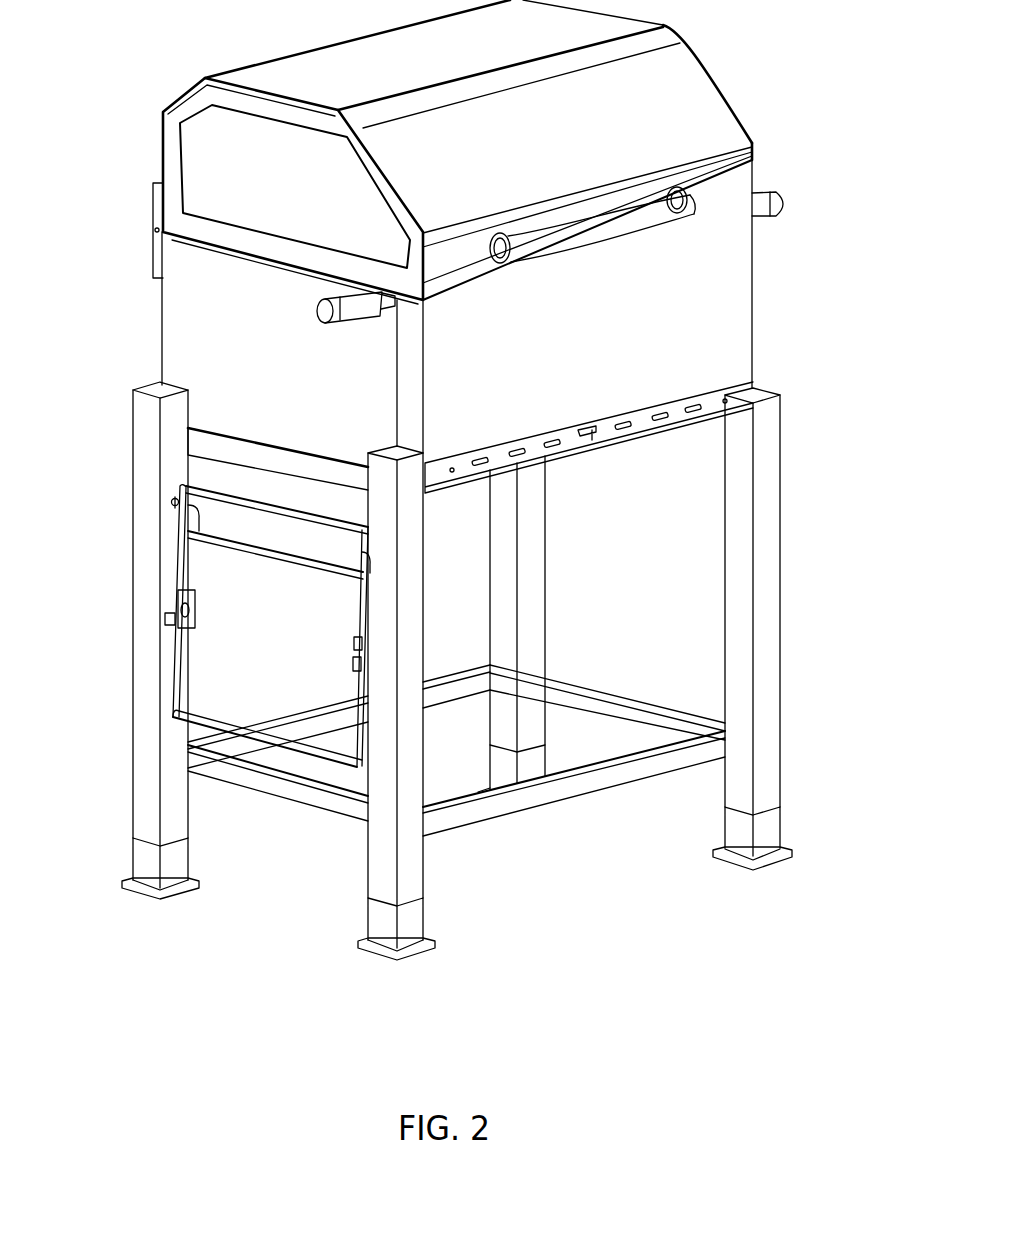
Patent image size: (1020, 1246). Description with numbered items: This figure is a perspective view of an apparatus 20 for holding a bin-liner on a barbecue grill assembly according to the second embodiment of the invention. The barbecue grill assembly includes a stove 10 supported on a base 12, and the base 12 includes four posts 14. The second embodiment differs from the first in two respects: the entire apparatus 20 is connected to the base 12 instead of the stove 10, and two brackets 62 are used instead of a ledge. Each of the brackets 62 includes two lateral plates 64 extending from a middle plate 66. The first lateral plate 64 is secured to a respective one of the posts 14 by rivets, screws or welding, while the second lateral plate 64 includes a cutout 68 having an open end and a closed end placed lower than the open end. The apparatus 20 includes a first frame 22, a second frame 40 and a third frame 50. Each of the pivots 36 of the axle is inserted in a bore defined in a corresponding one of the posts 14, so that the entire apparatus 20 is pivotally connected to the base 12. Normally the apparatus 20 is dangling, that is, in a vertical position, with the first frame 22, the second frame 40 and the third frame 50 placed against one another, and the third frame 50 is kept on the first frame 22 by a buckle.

The stove 10 is at (732, 88).
The base 12 is at (788, 529).
The post 14 is at (416, 879).
The apparatus 20 is at (327, 765).
The first frame 22 is at (249, 609).
The pivot 36 is at (172, 504).
The second frame 40 is at (320, 518).
The third frame 50 is at (167, 720).
The bracket 62 is at (143, 610).
The lateral plate 64 is at (194, 614).
The middle plate 66 is at (193, 589).
The cutout 68 is at (357, 652).